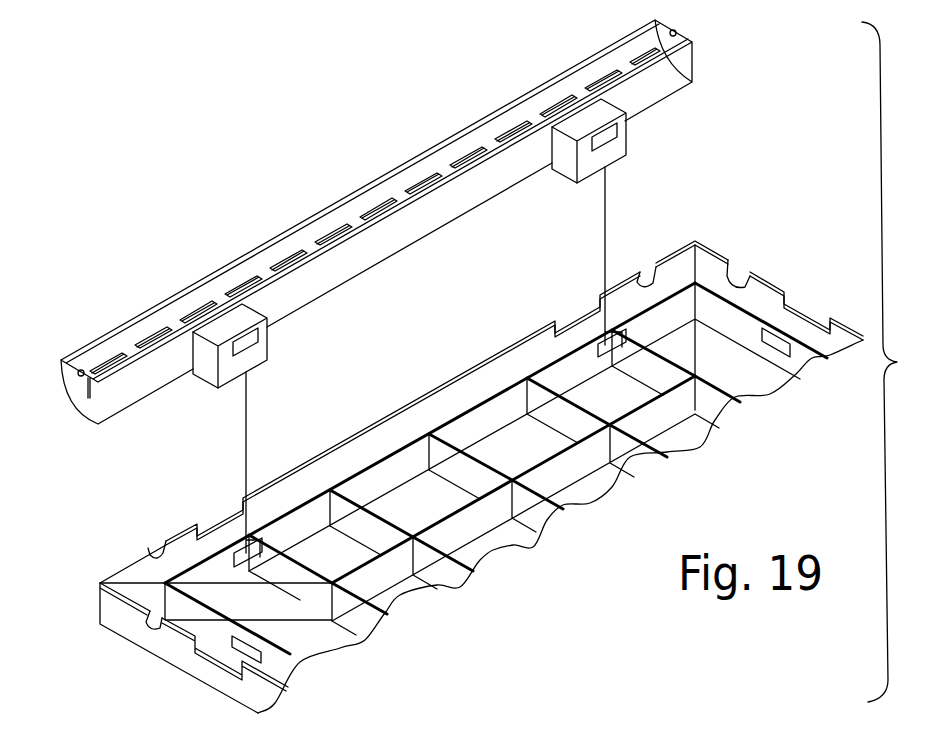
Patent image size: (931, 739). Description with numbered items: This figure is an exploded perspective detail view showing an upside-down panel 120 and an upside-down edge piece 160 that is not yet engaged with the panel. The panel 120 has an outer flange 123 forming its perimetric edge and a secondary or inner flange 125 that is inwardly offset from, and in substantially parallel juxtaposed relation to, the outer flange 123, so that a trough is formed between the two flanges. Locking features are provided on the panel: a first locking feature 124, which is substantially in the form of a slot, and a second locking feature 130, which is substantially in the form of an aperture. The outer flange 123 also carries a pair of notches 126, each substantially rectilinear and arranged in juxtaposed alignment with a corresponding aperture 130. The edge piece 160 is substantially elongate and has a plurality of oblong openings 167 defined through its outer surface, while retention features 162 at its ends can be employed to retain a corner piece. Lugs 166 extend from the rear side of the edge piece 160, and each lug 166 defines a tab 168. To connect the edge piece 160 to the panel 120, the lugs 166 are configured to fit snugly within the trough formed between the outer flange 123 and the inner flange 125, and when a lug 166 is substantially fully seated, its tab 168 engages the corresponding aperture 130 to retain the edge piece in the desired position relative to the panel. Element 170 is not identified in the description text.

The panel 120 is at (525, 585).
The outer flange 123 is at (427, 428).
The first locking feature 124 is at (646, 274).
The inner flange 125 is at (503, 392).
The notch 126 is at (825, 318).
The second locking feature 130 is at (775, 330).
The edge piece 160 is at (258, 183).
The retention feature 162 is at (676, 37).
The lug 166 is at (628, 162).
The opening 167 is at (386, 206).
The tab 168 is at (616, 140).
The hanger side wall 170 is at (553, 148).